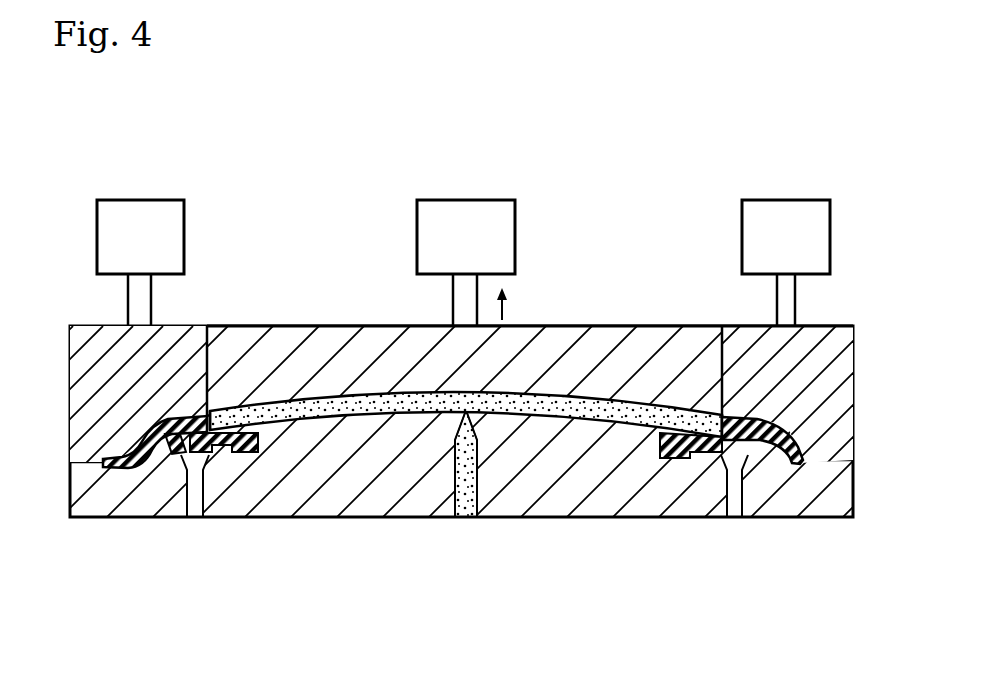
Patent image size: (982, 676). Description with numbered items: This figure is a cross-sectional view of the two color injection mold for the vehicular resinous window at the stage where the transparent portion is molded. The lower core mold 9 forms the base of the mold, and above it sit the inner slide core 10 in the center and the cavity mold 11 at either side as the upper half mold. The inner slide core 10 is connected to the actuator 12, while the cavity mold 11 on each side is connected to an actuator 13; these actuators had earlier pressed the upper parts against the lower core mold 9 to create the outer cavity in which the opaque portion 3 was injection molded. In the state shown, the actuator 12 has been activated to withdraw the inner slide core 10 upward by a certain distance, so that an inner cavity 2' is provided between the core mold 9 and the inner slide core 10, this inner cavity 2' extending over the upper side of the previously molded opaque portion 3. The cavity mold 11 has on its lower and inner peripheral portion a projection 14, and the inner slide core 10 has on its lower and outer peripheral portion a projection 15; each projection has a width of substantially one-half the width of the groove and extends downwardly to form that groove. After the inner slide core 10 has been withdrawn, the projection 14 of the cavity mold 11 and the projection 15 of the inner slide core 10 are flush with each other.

The inner cavity 2' is at (466, 498).
The opaque portion 3 is at (182, 440).
The lower core mold 9 is at (332, 505).
The inner slide core 10 is at (568, 342).
The cavity mold 11 is at (87, 332).
The actuator 12 is at (466, 215).
The actuator 13 is at (125, 215).
The projection 14 is at (200, 417).
The projection 15 is at (217, 412).